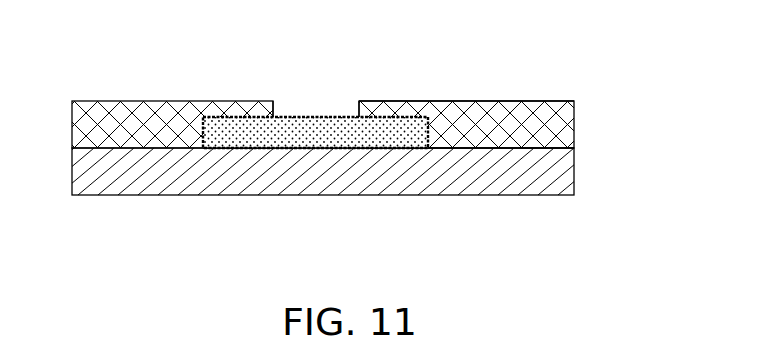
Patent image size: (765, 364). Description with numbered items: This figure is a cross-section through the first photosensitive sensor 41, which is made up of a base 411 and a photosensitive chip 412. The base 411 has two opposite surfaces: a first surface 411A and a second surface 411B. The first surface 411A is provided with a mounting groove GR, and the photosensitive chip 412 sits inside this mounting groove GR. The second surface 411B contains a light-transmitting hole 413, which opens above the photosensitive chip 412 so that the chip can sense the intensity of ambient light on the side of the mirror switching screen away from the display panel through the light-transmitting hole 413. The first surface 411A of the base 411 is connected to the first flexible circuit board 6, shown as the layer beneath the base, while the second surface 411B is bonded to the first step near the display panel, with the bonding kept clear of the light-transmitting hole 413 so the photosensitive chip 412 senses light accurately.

The first photosensitive sensor 41 is at (323, 120).
The base 411 is at (133, 132).
The first surface 411A is at (437, 147).
The second surface 411B is at (478, 101).
The photosensitive chip 412 is at (250, 137).
The light-transmitting hole 413 is at (310, 106).
The first flexible circuit board 6 is at (505, 169).
The mounting groove GR is at (267, 148).